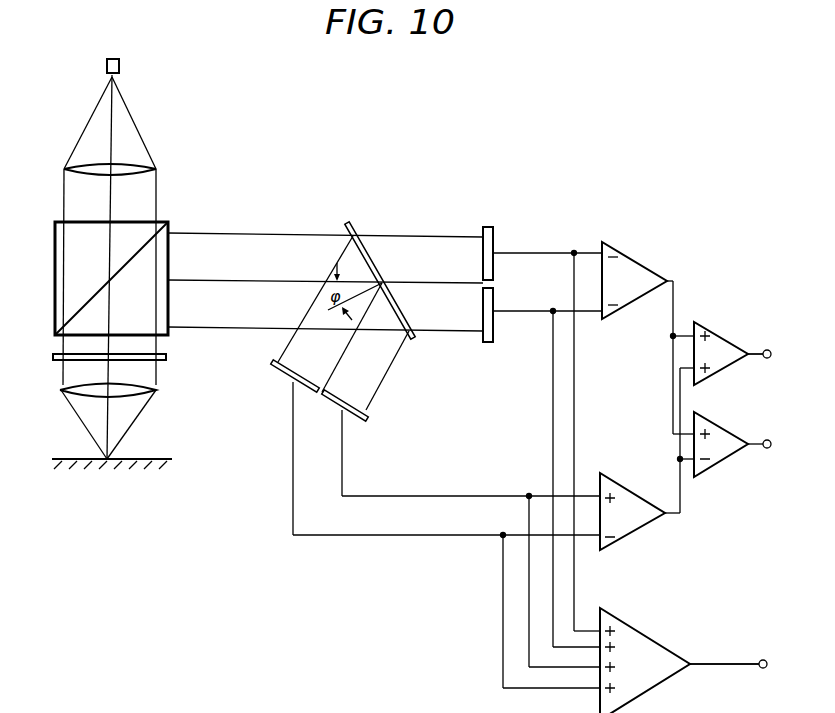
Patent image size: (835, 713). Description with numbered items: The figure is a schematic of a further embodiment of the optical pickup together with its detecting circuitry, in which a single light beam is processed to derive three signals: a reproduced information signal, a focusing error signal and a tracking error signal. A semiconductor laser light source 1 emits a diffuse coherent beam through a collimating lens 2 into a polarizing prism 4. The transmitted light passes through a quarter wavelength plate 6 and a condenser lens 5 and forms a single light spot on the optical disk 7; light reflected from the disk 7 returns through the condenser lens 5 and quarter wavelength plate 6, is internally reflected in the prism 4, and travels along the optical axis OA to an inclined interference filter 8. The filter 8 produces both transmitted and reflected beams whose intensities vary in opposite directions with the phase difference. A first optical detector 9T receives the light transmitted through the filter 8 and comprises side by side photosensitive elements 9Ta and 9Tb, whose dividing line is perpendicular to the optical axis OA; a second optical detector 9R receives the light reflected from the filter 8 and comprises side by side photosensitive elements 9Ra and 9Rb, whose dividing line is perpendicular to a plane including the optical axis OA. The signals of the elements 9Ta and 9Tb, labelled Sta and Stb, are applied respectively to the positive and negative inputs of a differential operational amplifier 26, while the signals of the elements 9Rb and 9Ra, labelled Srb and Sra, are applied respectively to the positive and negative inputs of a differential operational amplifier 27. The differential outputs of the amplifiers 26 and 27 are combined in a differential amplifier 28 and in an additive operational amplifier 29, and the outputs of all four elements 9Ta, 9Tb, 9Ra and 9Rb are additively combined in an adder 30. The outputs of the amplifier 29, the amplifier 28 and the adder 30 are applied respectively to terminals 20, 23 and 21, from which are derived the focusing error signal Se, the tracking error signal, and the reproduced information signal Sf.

The semiconductor laser light source 1 is at (120, 67).
The collimating lens 2 is at (133, 165).
The polarizing prism 4 is at (55, 249).
The condenser lens 5 is at (82, 388).
The quarter wavelength plate 6 is at (58, 361).
The optical disk 7 is at (145, 460).
The interference filter 8 is at (348, 221).
The first optical detector 9T is at (450, 273).
The first photosensitive element 9Ta is at (494, 236).
The second photosensitive element 9Tb is at (492, 335).
The second optical detector 9R is at (306, 405).
The photosensitive element 9Ra is at (272, 365).
The photosensitive element 9Rb is at (374, 422).
The terminal 20 is at (771, 351).
The terminal 21 is at (763, 668).
The terminal 23 is at (768, 426).
The differential operational amplifier 26 is at (636, 262).
The differential operational amplifier 27 is at (634, 484).
The differential amplifier 28 is at (724, 463).
The additive operational amplifier 29 is at (703, 322).
The adder 30 is at (640, 630).
The optical axis OA is at (244, 281).
The signal Sta is at (555, 243).
The signal Stb is at (589, 320).
The signal Sra is at (333, 545).
The signal Srb is at (470, 494).
The focusing error signal Se is at (755, 352).
The reproduced information signal Sf is at (712, 662).